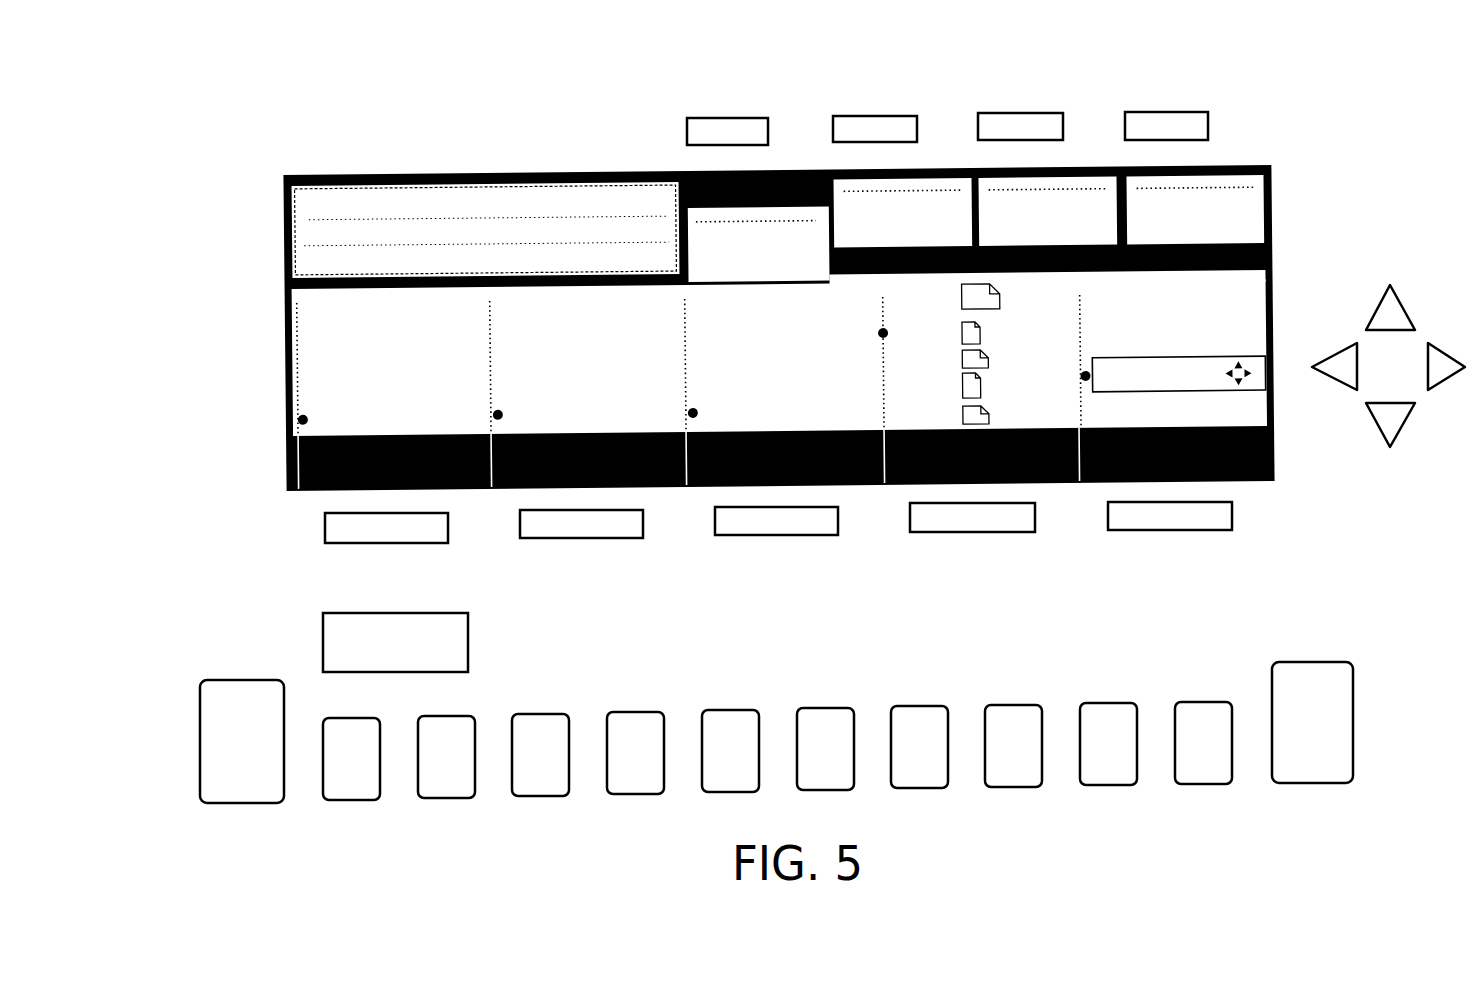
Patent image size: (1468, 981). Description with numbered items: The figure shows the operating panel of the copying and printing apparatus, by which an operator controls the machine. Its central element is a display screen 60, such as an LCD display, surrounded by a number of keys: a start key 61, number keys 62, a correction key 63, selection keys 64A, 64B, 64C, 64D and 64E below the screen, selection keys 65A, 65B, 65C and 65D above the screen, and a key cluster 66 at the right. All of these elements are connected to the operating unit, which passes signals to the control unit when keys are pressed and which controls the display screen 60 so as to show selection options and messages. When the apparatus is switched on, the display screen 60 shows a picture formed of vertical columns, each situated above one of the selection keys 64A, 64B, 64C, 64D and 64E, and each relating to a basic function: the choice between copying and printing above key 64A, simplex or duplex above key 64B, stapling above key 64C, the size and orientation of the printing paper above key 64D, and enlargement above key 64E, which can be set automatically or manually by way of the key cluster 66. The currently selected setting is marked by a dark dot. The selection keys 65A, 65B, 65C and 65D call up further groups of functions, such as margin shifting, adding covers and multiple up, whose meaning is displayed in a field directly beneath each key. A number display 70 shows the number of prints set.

The display screen 60 is at (289, 378).
The start key 61 is at (200, 757).
The number keys 62 is at (835, 673).
The correction key 63 is at (1310, 662).
The selection key 64A is at (350, 543).
The selection key 64B is at (545, 538).
The selection key 64C is at (740, 535).
The selection key 64D is at (933, 532).
The selection key 64E is at (1133, 530).
The selection key 65A is at (694, 118).
The selection key 65B is at (852, 116).
The selection key 65C is at (1005, 113).
The selection key 65D is at (1148, 112).
The key cluster 66 is at (1381, 263).
The number display 70 is at (468, 655).